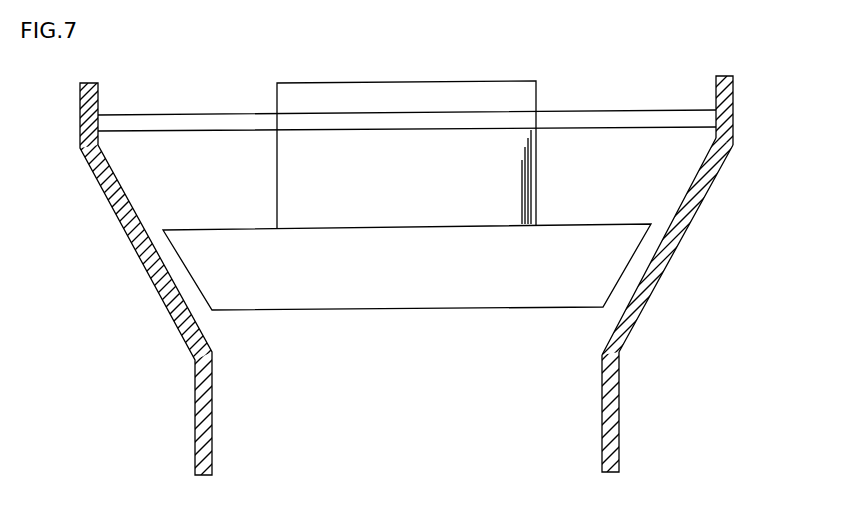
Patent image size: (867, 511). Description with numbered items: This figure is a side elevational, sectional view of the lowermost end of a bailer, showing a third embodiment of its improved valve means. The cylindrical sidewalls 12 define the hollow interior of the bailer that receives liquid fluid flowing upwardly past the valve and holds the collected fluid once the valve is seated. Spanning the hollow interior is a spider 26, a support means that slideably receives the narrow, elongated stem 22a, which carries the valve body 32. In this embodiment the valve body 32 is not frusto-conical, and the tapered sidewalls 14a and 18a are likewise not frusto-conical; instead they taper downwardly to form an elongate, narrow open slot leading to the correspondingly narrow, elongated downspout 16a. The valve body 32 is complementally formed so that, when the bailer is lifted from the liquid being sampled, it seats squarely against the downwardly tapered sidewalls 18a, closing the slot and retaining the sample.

The cylindrical sidewalls 12 is at (733, 110).
The tapered sidewall 14a is at (677, 247).
The downspout 16a is at (619, 453).
The tapered sidewall 18a is at (190, 322).
The stem 22a is at (277, 172).
The spider 26 is at (162, 115).
The valve body 32 is at (176, 251).